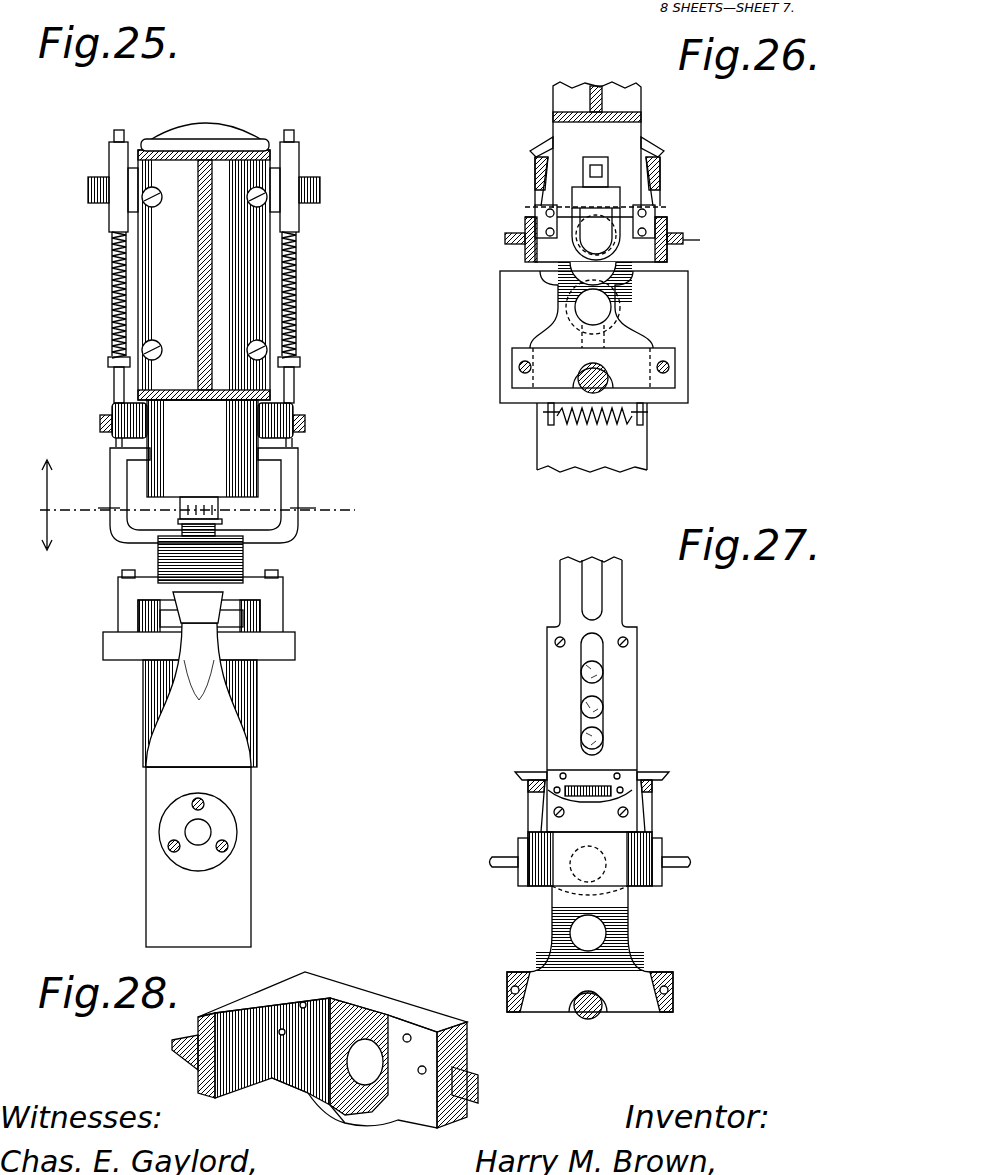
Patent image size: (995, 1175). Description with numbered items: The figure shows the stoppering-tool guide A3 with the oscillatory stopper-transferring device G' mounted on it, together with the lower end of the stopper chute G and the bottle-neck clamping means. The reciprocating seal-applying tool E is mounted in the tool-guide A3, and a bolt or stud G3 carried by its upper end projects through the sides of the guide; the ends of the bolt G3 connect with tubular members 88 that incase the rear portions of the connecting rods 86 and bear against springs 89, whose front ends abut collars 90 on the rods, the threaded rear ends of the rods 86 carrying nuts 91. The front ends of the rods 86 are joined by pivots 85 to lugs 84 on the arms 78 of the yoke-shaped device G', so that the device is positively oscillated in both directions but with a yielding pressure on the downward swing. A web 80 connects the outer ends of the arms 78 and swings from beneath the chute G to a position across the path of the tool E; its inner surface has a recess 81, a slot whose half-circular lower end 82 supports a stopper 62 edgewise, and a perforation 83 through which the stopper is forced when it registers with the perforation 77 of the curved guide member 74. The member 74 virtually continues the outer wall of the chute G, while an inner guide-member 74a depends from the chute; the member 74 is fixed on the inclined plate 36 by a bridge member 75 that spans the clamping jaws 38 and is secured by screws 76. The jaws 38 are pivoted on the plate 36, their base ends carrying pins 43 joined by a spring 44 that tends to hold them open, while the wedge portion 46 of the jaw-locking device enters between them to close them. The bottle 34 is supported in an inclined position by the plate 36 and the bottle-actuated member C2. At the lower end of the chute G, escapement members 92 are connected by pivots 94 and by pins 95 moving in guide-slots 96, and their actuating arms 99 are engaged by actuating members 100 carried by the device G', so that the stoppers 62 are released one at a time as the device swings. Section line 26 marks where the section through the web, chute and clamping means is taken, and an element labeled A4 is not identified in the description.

In FIG. 25, the nuts 91 is at (290, 136).
In FIG. 25, the bolt or stud G3 is at (140, 192).
In FIG. 25, the tubular members 88 is at (115, 212).
In FIG. 25, the springs 89 is at (112, 258).
In FIG. 25, the column A4 is at (200, 290).
In FIG. 26, the column A4 is at (580, 95).
In FIG. 25, the collars 90 is at (296, 360).
In FIG. 25, the connecting rods 86 is at (118, 388).
In FIG. 25, the lugs 84 is at (130, 422).
In FIG. 25, the pivots 85 is at (105, 426).
In FIG. 25, the tool-guide A3 is at (202, 448).
In FIG. 25, the arms 78 is at (128, 470).
In FIG. 26, the arms 78 is at (510, 240).
In FIG. 27, the arms 78 is at (520, 875).
In FIG. 28, the arms 78 is at (185, 1050).
In FIG. 25, the section line 26 is at (177, 505).
In FIG. 25, the seal-applying tool E is at (96, 510).
In FIG. 25, the oscillatory yoke-shaped stopper-transferring member G' is at (322, 505).
In FIG. 26, the oscillatory yoke-shaped stopper-transferring member G' is at (741, 256).
In FIG. 27, the oscillatory yoke-shaped stopper-transferring member G' is at (562, 856).
In FIG. 28, the oscillatory yoke-shaped stopper-transferring member G' is at (332, 1022).
In FIG. 25, the stoppers 62 is at (150, 530).
In FIG. 27, the stoppers 62 is at (598, 740).
In FIG. 25, the recess 81 is at (222, 530).
In FIG. 26, the recess 81 is at (620, 222).
In FIG. 28, the recess 81 is at (355, 1020).
In FIG. 25, the perforation 77 is at (212, 578).
In FIG. 26, the perforation 77 is at (600, 308).
In FIG. 27, the perforation 77 is at (604, 935).
In FIG. 25, the screws 76 is at (125, 576).
In FIG. 26, the screws 76 is at (520, 367).
In FIG. 25, the curved guide member 74 is at (180, 553).
In FIG. 26, the curved guide member 74 is at (560, 287).
In FIG. 27, the curved guide member 74 is at (560, 905).
In FIG. 26, the inner guide-member 74a is at (545, 218).
In FIG. 25, the bridge member 75 is at (275, 612).
In FIG. 26, the bridge member 75 is at (672, 382).
In FIG. 27, the bridge member 75 is at (645, 1008).
In FIG. 25, the plate-form portion 36 is at (285, 650).
In FIG. 26, the plate-form portion 36 is at (686, 305).
In FIG. 25, the jaws 38 is at (200, 679).
In FIG. 26, the jaws 38 is at (545, 322).
In FIG. 25, the bottle 34 is at (150, 800).
In FIG. 25, the bottle-actuated member C2 is at (237, 832).
In FIG. 26, the actuating arms 99 is at (533, 151).
In FIG. 27, the actuating arms 99 is at (520, 773).
In FIG. 26, the actuating members 100 is at (538, 183).
In FIG. 27, the actuating members 100 is at (528, 805).
In FIG. 26, the escapement members 92 is at (596, 163).
In FIG. 27, the escapement members 92 is at (612, 772).
In FIG. 26, the perforation 83 is at (615, 232).
In FIG. 27, the perforation 83 is at (605, 860).
In FIG. 28, the perforation 83 is at (370, 1060).
In FIG. 26, the wedge portion 46 is at (602, 392).
In FIG. 27, the wedge portion 46 is at (590, 1012).
In FIG. 26, the pins 43 is at (550, 420).
In FIG. 26, the spring 44 is at (590, 420).
In FIG. 27, the stopper-chute G is at (630, 694).
In FIG. 27, the pivots 94 is at (560, 776).
In FIG. 27, the pins 95 is at (528, 795).
In FIG. 27, the guide-slots 96 is at (602, 798).
In FIG. 27, the web 80 is at (620, 890).
In FIG. 28, the web 80 is at (300, 1092).
In FIG. 28, the half-circular lower end 82 is at (342, 1125).